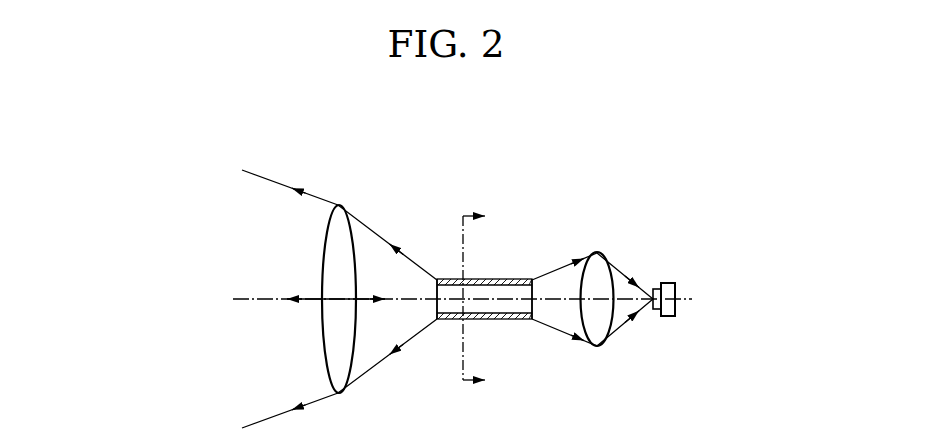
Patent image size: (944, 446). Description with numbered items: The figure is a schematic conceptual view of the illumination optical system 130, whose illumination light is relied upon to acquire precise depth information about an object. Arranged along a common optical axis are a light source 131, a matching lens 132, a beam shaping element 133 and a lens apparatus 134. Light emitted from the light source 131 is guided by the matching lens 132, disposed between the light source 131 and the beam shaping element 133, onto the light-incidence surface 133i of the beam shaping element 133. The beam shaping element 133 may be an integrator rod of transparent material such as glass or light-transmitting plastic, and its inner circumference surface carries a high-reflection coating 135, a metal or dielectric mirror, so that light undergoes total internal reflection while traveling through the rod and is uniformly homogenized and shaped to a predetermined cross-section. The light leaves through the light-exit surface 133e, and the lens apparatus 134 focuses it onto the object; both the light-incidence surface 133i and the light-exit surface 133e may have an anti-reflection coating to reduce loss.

The illumination optical system 130 is at (603, 172).
The light source 131 is at (671, 283).
The matching lens 132 is at (597, 252).
The beam shaping element 133 is at (493, 288).
The light-exit surface 133e is at (437, 288).
The light-incidence surface 133i is at (532, 290).
The lens apparatus 134 is at (338, 205).
The high-reflection coating 135 is at (494, 319).